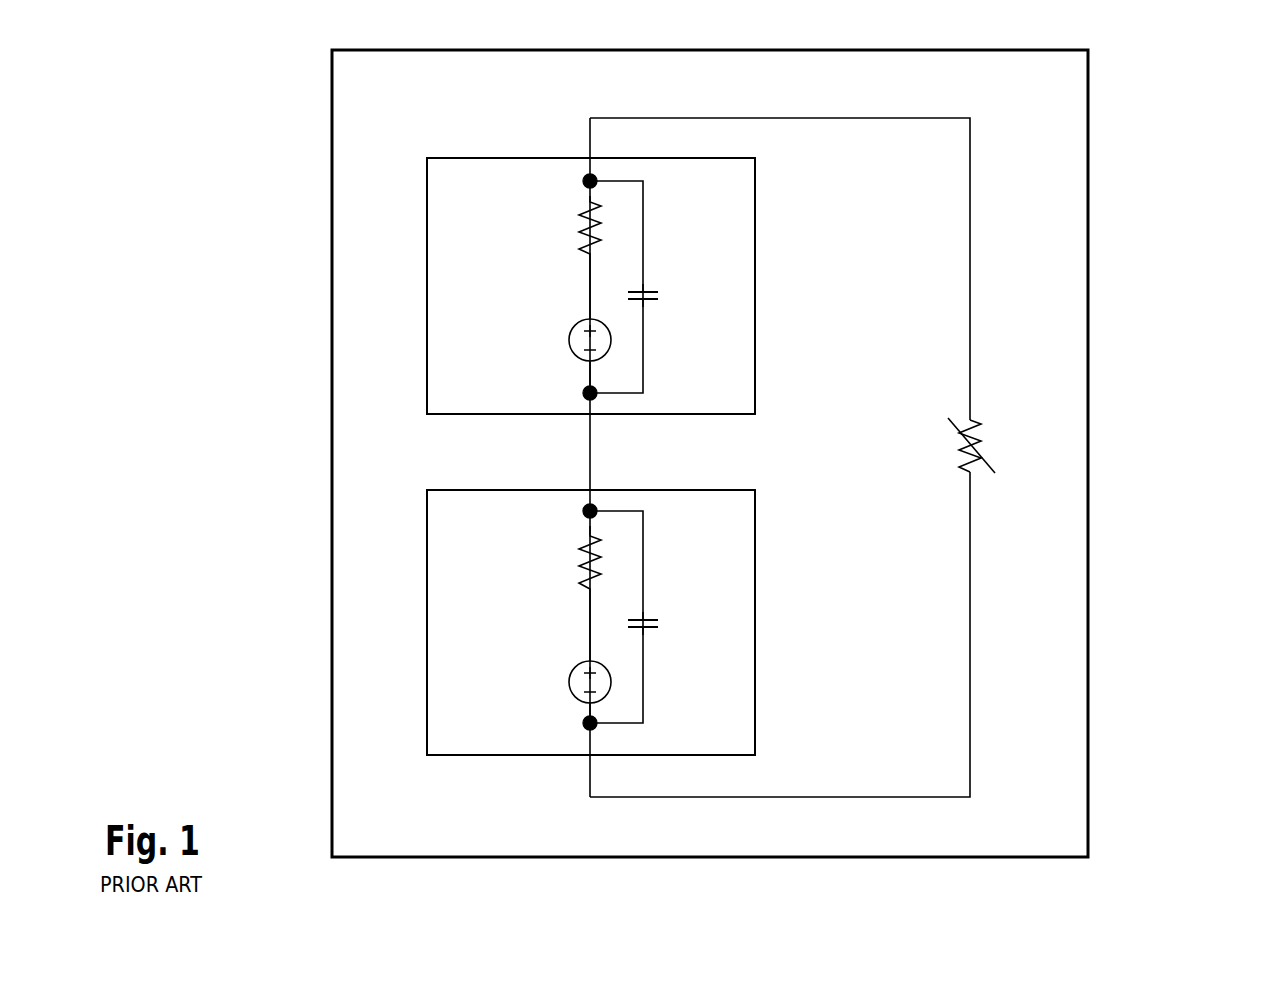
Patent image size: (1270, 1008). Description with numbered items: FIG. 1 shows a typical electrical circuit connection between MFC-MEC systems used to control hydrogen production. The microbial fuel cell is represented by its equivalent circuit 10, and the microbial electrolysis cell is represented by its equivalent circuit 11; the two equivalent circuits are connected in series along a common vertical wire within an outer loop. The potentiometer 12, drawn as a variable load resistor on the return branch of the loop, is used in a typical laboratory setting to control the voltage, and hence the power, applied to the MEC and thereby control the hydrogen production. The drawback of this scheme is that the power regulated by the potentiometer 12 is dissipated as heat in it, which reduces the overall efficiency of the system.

The equivalent circuit of MFC 10 is at (423, 313).
The equivalent circuit of MEC 11 is at (423, 645).
The potentiometer 12 is at (1000, 447).